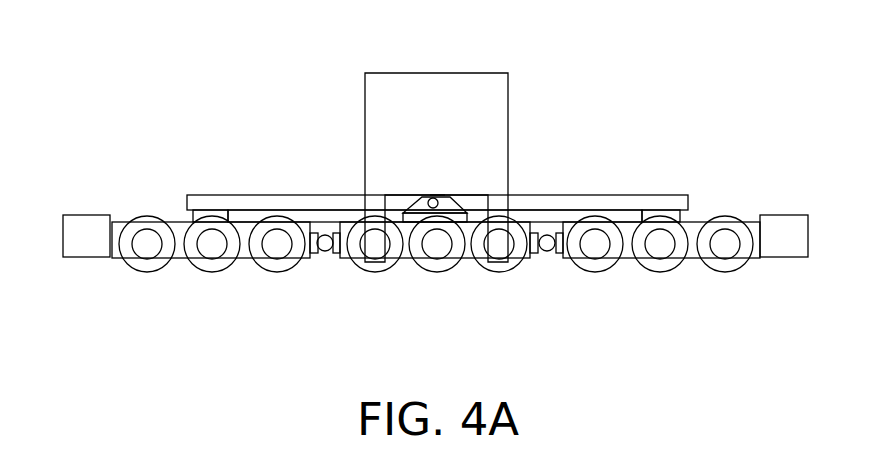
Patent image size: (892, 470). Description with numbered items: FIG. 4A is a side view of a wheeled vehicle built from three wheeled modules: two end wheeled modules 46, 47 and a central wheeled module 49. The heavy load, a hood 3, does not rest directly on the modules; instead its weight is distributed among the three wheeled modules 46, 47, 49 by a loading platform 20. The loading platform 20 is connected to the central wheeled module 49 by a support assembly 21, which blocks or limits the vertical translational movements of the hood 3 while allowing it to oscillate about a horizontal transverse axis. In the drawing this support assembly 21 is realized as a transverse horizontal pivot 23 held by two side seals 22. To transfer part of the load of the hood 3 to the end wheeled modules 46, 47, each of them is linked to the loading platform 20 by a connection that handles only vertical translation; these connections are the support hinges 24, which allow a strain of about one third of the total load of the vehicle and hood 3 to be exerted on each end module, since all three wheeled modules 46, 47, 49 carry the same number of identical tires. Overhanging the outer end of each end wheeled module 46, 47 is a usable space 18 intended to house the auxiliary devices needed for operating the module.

The hood 3 is at (365, 95).
The usable space 18 is at (795, 213).
The loading platform 20 is at (308, 199).
The support assembly 21 is at (438, 191).
The side seals 22 is at (446, 212).
The transverse horizontal pivot 23 is at (431, 197).
The support hinges 24 is at (196, 217).
The end wheeled module 46 is at (188, 275).
The end wheeled module 47 is at (632, 275).
The central wheeled module 49 is at (412, 275).